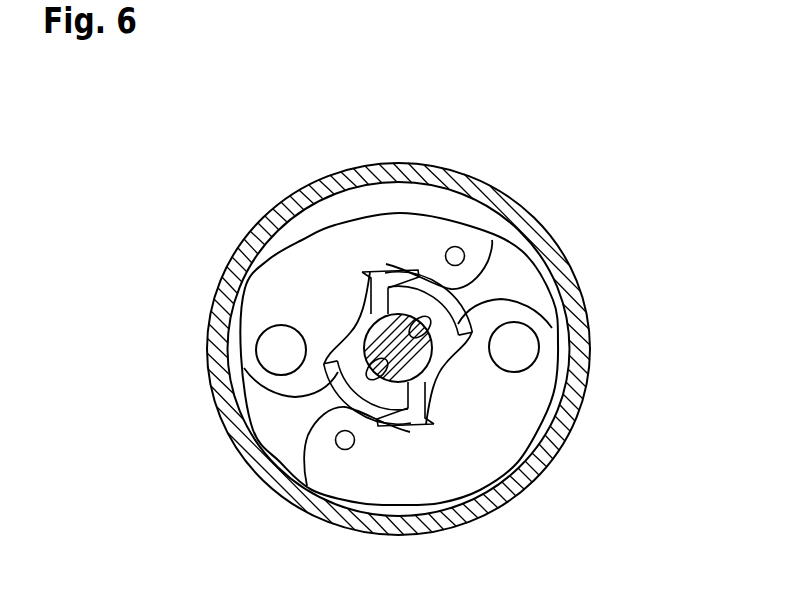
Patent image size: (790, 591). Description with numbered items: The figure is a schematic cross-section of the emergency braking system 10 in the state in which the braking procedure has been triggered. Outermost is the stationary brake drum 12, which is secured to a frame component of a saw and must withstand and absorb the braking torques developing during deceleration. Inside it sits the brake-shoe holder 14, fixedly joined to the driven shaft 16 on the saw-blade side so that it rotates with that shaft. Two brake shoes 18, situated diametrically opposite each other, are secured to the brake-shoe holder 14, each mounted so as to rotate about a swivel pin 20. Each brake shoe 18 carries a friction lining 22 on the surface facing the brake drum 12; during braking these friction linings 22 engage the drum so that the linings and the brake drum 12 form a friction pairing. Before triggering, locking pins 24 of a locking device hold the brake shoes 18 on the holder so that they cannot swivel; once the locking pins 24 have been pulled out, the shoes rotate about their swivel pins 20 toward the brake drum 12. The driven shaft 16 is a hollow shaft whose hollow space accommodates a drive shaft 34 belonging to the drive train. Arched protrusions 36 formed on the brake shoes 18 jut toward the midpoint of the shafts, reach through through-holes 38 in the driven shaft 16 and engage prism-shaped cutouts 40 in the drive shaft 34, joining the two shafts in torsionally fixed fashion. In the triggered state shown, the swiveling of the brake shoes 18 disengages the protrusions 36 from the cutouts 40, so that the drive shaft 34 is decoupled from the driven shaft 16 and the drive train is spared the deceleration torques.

The emergency braking system 10 is at (582, 197).
The brake drum 12 is at (583, 357).
The brake-shoe holder 14 is at (302, 417).
The driven shaft 16 is at (414, 292).
The brake shoe 18 is at (256, 287).
The swivel pin 20 is at (280, 348).
The friction lining 22 is at (356, 198).
The locking pin 24 is at (455, 256).
The drive shaft 34 is at (447, 357).
The arched protrusion 36 is at (352, 317).
The through-hole 38 is at (378, 298).
The prism-shaped cutout 40 is at (520, 290).